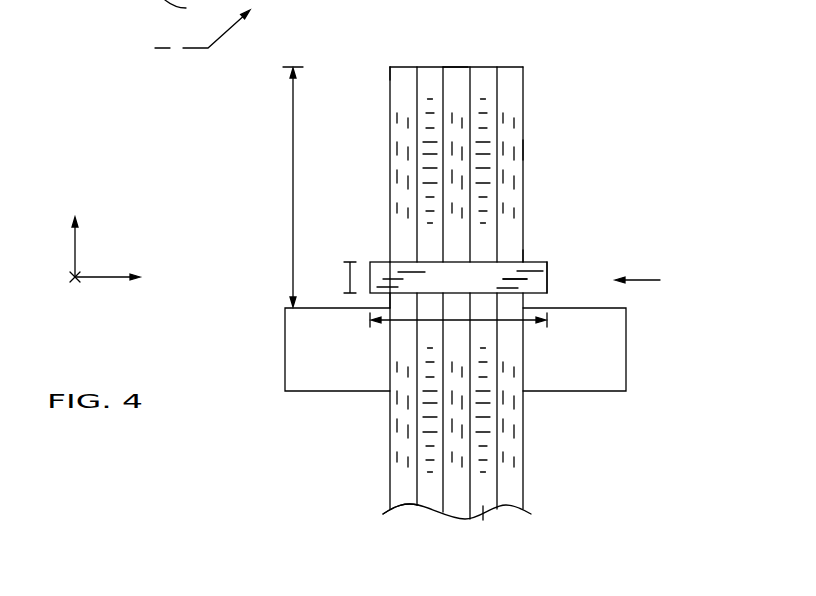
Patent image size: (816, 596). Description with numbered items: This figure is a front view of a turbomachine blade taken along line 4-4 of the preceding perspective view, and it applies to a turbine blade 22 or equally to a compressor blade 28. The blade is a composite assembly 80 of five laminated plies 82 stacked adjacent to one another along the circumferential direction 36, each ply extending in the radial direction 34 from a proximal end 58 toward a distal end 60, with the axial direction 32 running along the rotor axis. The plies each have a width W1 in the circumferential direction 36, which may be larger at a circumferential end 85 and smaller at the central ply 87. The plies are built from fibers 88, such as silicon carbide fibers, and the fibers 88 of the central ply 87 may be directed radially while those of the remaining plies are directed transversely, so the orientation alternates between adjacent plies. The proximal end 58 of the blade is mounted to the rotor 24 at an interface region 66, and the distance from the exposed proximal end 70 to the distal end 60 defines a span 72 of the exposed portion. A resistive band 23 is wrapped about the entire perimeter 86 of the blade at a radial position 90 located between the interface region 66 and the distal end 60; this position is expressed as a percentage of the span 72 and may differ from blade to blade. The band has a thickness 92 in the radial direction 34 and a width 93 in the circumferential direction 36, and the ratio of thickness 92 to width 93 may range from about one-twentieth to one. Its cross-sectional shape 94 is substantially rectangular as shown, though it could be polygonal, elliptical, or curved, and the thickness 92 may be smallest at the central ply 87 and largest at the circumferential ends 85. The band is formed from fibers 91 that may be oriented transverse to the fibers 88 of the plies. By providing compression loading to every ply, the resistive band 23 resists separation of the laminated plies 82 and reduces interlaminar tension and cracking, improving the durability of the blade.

The line 4- 4 is at (211, 25).
The width W1 is at (194, 10).
The turbine blade 22 is at (471, 261).
The compressor blade 28 is at (517, 53).
The axial direction 32 is at (71, 282).
The radial direction 34 is at (73, 250).
The circumferential direction 36 is at (102, 274).
The distal end 60 is at (388, 65).
The central ply 87 is at (456, 67).
The composite assembly 80 is at (538, 152).
The circumferential end 85 is at (390, 165).
The entire perimeter 86 is at (524, 261).
The resistive band 23 is at (547, 270).
The fibers 91 is at (527, 277).
The radial position 90 is at (645, 280).
The cross-sectional shape 94 is at (471, 288).
The exposed proximal end 70 is at (387, 308).
The span 72 is at (293, 188).
The thickness 92 is at (347, 276).
The width 93 is at (400, 320).
The interface region 66 is at (388, 357).
The rotor 24 is at (626, 342).
The fibers 88 is at (457, 425).
The proximal end 58 is at (393, 508).
The laminated plies 82 is at (484, 514).